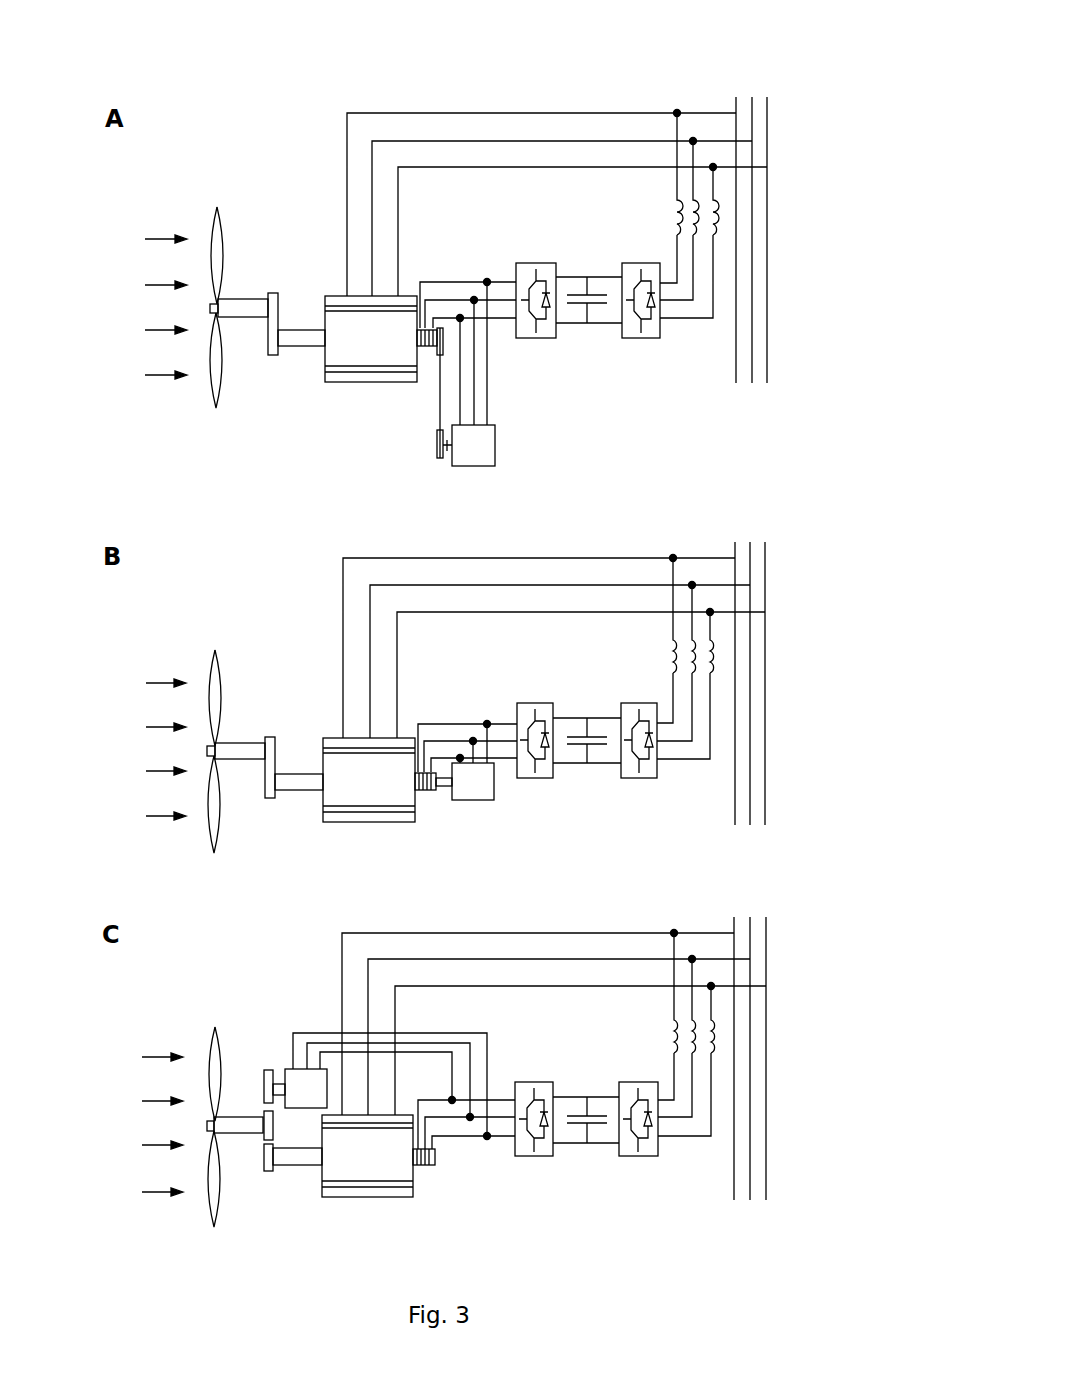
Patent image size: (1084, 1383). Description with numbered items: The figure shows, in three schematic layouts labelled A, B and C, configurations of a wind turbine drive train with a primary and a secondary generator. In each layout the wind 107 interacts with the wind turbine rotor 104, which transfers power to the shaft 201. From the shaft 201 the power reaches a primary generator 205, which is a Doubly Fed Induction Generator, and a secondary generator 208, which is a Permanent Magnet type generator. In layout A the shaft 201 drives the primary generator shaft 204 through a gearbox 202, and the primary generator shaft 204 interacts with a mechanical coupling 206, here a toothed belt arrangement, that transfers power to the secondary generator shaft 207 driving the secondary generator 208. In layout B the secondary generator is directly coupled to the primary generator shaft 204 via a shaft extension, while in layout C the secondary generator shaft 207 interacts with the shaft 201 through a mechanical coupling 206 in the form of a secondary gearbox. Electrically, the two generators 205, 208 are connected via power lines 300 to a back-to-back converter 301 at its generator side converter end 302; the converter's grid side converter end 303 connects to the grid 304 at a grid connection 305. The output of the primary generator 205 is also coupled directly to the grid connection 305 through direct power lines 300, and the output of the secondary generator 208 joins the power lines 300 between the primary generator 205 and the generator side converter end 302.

The wind turbine rotor 104 is at (207, 170).
The wind 107 is at (155, 210).
The shaft 201 is at (232, 308).
The gearbox 202 is at (272, 312).
The primary generator shaft 204 is at (300, 339).
The primary generator 205 is at (352, 353).
The mechanical coupling 206 is at (423, 420).
The secondary generator shaft 207 is at (448, 466).
The secondary generator 208 is at (475, 445).
The power lines 300 is at (440, 140).
The back-to-back converter 301 is at (600, 250).
The generator side converter end 302 is at (523, 353).
The grid side converter end 303 is at (630, 353).
The grid 304 is at (750, 76).
The grid connection 305 is at (759, 131).